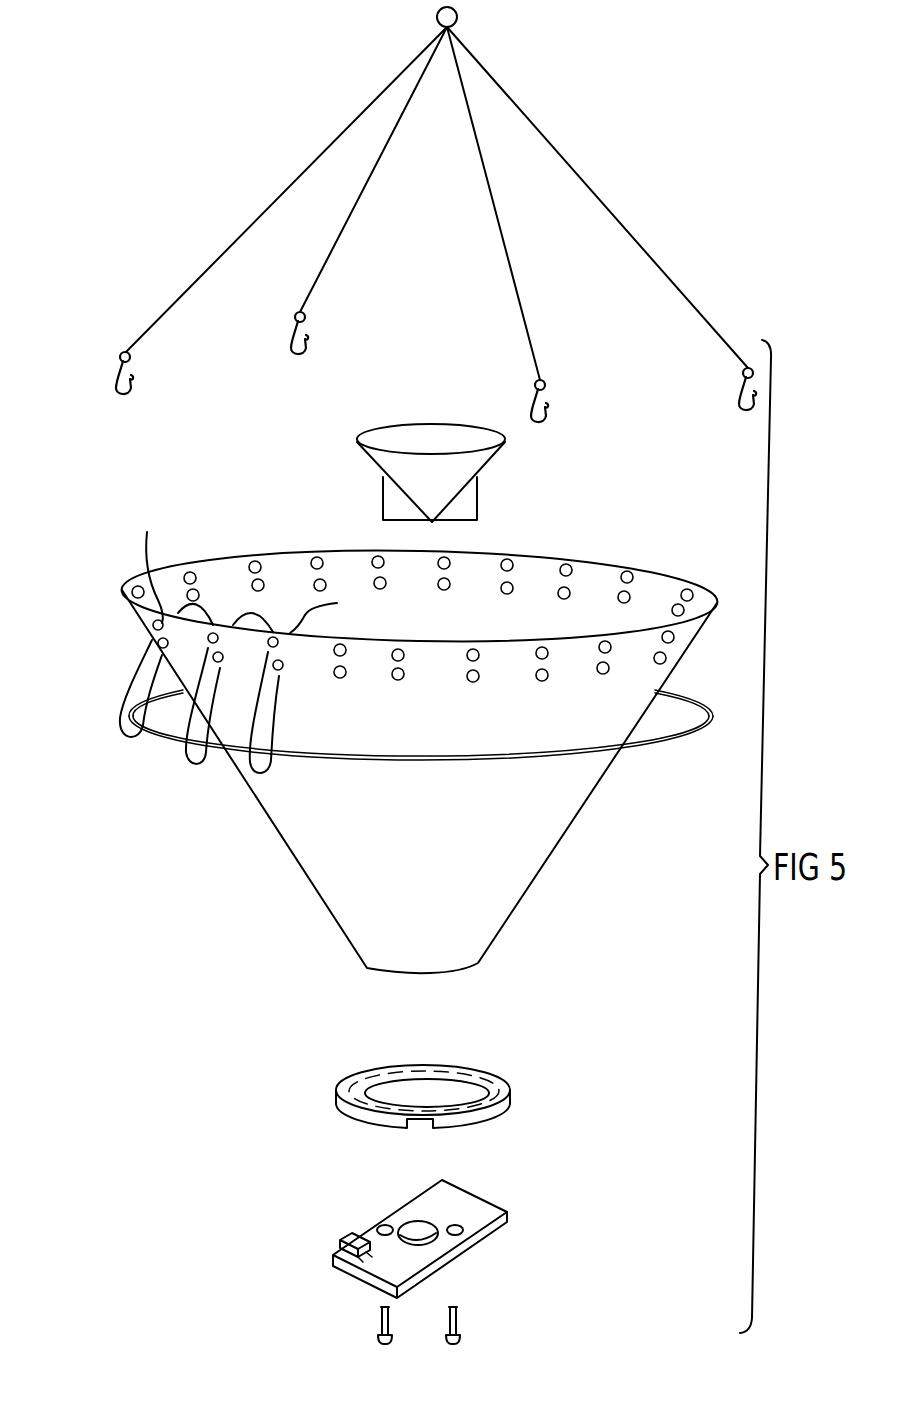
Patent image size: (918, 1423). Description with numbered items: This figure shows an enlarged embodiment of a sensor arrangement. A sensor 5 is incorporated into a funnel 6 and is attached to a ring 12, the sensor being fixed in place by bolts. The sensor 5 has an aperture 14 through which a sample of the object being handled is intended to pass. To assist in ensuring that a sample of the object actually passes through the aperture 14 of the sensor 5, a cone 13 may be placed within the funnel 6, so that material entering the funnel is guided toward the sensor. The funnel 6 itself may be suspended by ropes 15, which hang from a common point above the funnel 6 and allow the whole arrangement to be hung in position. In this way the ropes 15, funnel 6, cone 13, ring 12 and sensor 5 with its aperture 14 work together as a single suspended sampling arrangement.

The ropes 15 is at (645, 255).
The cone 13 is at (463, 472).
The funnel 6 is at (535, 853).
The ring 12 is at (503, 1097).
The sensor 5 is at (527, 1239).
The aperture 14 is at (418, 1237).